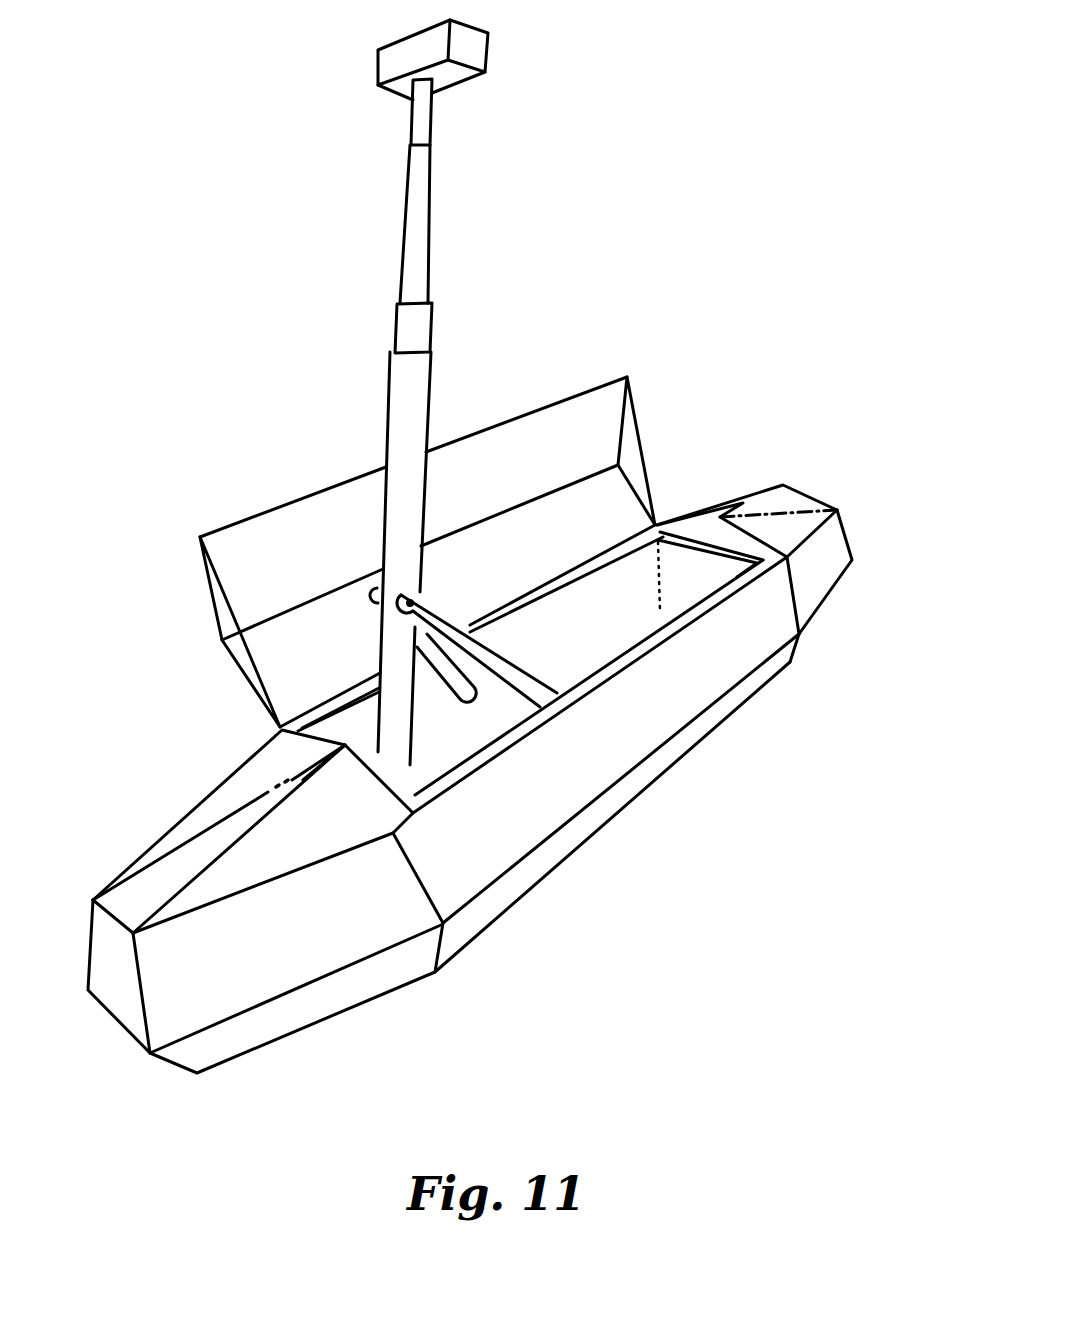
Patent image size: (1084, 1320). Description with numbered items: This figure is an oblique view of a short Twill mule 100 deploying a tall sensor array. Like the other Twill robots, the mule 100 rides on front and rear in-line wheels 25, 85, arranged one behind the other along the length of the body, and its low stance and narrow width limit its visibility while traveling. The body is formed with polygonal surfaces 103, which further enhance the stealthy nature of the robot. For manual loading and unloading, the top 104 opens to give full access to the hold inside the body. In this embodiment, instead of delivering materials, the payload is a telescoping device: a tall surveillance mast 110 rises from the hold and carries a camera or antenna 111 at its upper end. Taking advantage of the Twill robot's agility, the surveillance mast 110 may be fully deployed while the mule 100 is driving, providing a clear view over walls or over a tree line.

The mule 100 is at (733, 817).
The front in-line wheel 25 is at (290, 1038).
The polygonal surfaces 103 is at (322, 942).
The rear in-line wheel 85 is at (805, 645).
The top 104 is at (640, 432).
The surveillance mast 110 is at (395, 327).
The camera or antenna 111 is at (488, 52).